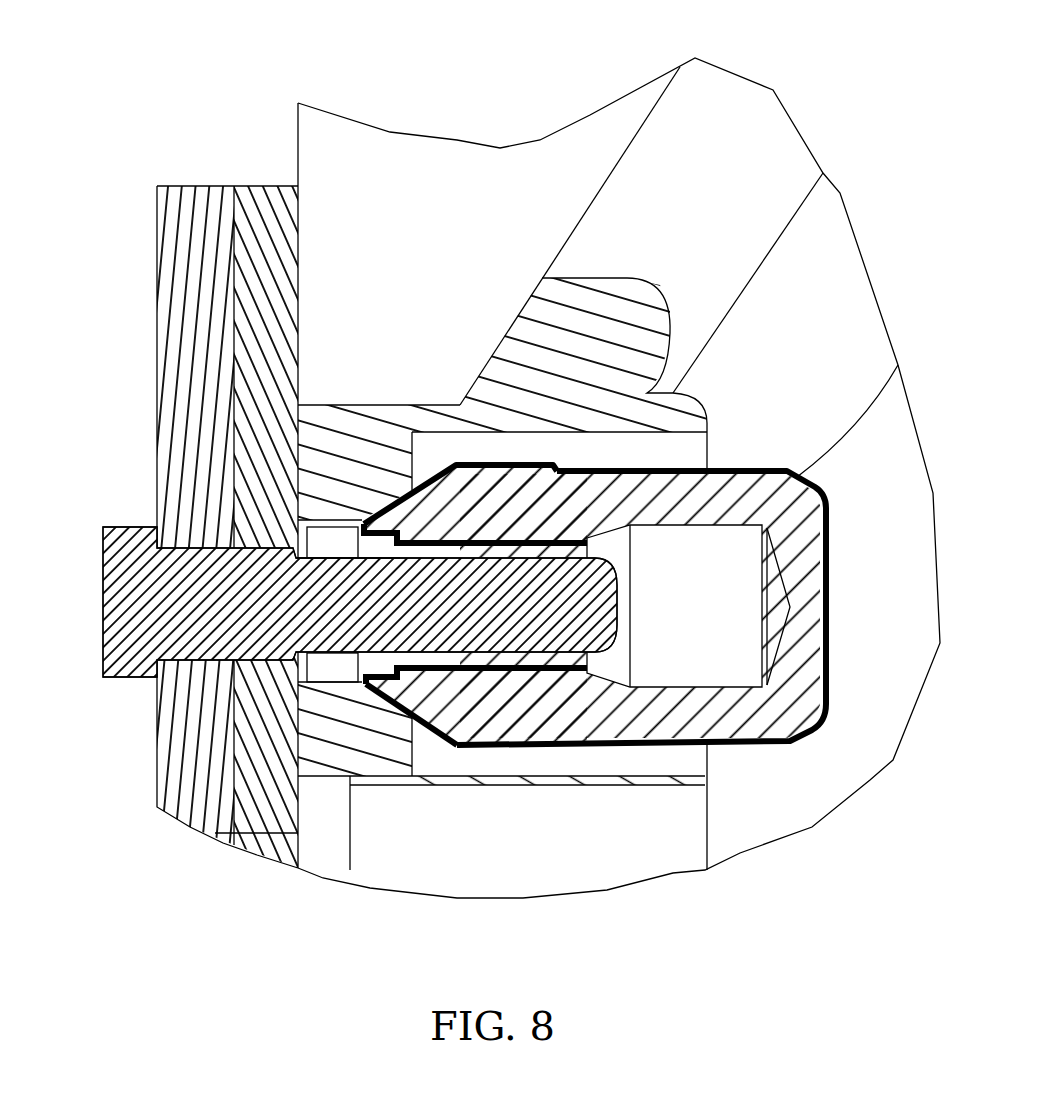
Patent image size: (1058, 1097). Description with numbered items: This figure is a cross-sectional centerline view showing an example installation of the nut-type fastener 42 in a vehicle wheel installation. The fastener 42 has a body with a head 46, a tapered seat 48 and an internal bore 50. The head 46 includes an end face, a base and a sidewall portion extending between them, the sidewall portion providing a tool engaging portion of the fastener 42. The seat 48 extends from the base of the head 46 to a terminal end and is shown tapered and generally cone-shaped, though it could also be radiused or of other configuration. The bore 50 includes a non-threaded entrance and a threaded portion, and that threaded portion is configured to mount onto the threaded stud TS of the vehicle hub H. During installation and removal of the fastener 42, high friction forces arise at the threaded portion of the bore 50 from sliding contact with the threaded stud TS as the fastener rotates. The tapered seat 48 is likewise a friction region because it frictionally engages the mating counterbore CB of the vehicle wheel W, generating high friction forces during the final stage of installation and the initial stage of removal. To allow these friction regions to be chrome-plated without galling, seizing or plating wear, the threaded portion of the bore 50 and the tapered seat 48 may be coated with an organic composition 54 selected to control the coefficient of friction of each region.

The vehicle hub H is at (236, 178).
The vehicle wheel W is at (735, 55).
The threaded stud TS is at (92, 645).
The counterbore CB is at (423, 732).
The nut-type fastener 42 is at (838, 598).
The head 46 is at (731, 509).
The tapered seat 48 is at (490, 516).
The internal bore 50 is at (365, 555).
The organic composition coating 54 is at (445, 458).